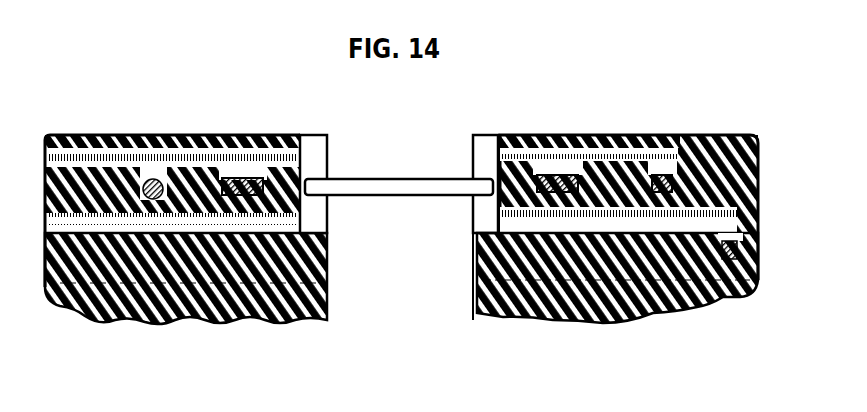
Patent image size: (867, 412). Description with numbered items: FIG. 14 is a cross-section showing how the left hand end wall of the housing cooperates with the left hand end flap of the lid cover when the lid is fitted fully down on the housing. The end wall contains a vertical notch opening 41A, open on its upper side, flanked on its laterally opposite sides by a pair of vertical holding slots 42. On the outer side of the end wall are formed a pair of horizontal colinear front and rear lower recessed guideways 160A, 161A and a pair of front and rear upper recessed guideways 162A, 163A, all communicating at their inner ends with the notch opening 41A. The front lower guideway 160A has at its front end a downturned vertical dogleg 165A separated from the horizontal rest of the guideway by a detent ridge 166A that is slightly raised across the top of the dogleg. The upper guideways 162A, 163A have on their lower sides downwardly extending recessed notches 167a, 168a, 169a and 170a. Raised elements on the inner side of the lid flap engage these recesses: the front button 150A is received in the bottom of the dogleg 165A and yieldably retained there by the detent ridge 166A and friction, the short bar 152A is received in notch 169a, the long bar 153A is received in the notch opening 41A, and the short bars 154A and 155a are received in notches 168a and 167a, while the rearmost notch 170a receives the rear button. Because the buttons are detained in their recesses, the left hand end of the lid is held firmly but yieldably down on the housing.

The rear upper recessed guideway 163A is at (72, 137).
The recessed notch 170a is at (150, 180).
The short bar 152A is at (242, 176).
The recessed notch 169a is at (259, 155).
The vertical holding slot 42 is at (305, 178).
The notch opening 41A is at (399, 167).
The long bar 153A is at (371, 184).
The rear lower recessed guideway 161A is at (155, 226).
The recessed notch 168a is at (519, 155).
The short bar 154A is at (543, 175).
The front upper recessed guideway 162A is at (599, 150).
The recessed notch 167a is at (656, 160).
The short bar 155a is at (663, 175).
The front lower recessed guideway 160A is at (704, 193).
The detent ridge 166A is at (752, 212).
The front button 150A is at (742, 248).
The downturned vertical dogleg 165A is at (716, 303).